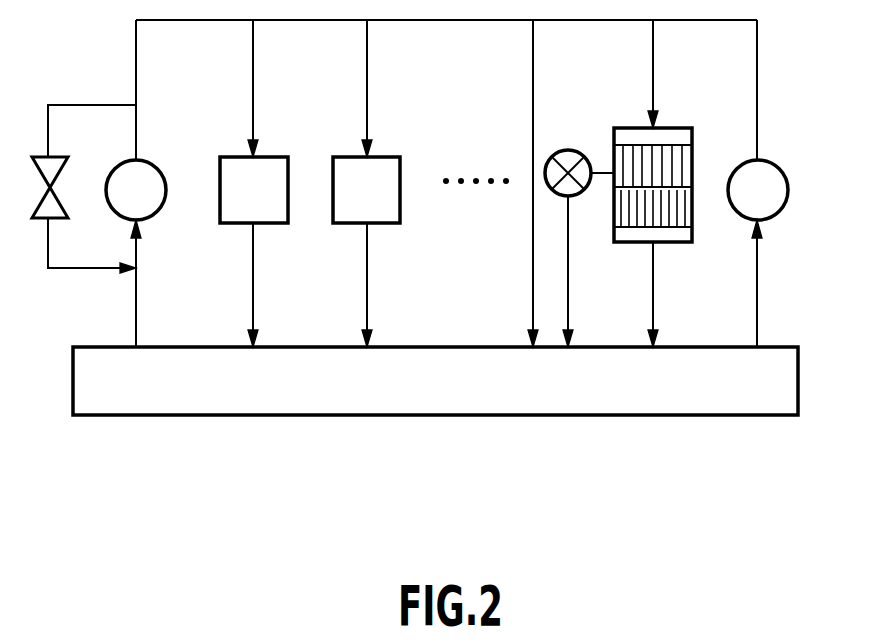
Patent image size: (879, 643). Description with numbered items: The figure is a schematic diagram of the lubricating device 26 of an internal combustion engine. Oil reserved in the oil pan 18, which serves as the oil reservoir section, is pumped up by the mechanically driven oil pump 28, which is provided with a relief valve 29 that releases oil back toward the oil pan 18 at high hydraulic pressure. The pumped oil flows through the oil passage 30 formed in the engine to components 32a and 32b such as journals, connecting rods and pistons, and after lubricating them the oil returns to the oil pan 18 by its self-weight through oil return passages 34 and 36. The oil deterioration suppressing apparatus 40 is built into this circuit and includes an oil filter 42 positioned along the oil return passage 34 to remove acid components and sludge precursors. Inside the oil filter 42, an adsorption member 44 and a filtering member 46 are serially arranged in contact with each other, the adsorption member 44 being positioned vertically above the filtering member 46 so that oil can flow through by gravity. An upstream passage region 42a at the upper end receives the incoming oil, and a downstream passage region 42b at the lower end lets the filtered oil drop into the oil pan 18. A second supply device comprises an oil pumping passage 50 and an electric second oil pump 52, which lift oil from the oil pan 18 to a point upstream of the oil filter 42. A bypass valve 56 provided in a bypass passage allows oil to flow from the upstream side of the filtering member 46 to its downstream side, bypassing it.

The oil pan 18 is at (630, 417).
The lubricating device 26 is at (433, 280).
The oil pump 28 is at (160, 212).
The relief valve 29 is at (34, 202).
The oil passage 30 is at (134, 48).
The component 32a is at (289, 218).
The component 32b is at (402, 218).
The oil return passage 34 is at (654, 320).
The oil return passage 36 is at (534, 55).
The oil deterioration suppressing apparatus 40 is at (697, 183).
The oil filter 42 is at (677, 164).
The upstream passage region 42a is at (682, 137).
The downstream passage region 42b is at (629, 243).
The adsorption member 44 is at (688, 172).
The filtering member 46 is at (684, 213).
The oil pumping passage 50 is at (758, 105).
The second oil pump 52 is at (786, 172).
The bypass valve 56 is at (574, 151).